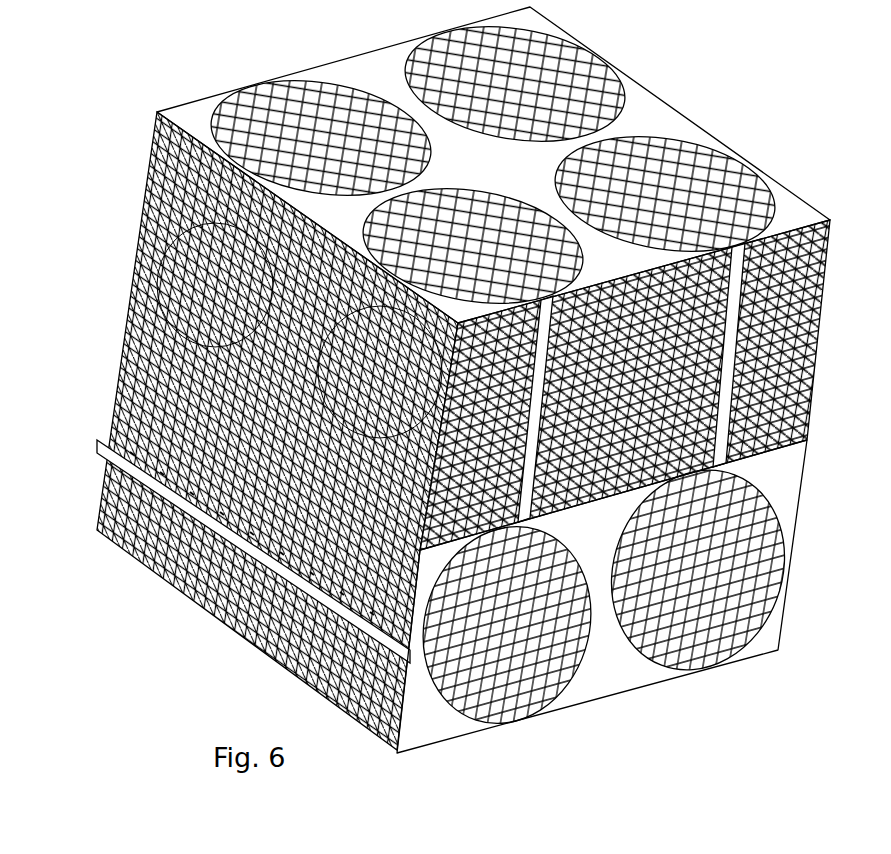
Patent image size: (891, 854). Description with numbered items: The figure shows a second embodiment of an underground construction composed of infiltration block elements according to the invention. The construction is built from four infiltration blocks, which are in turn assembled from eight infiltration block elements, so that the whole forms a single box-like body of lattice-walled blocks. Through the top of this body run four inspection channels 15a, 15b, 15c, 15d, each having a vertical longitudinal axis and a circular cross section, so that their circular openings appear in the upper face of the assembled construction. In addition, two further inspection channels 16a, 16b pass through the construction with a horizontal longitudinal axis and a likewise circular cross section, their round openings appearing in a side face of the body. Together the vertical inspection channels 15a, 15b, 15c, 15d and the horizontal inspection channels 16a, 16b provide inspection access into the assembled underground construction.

The inspection channel 15a is at (455, 77).
The inspection channel 15b is at (297, 137).
The inspection channel 15c is at (600, 202).
The inspection channel 15d is at (423, 257).
The inspection channel 16a is at (518, 633).
The inspection channel 16b is at (680, 617).